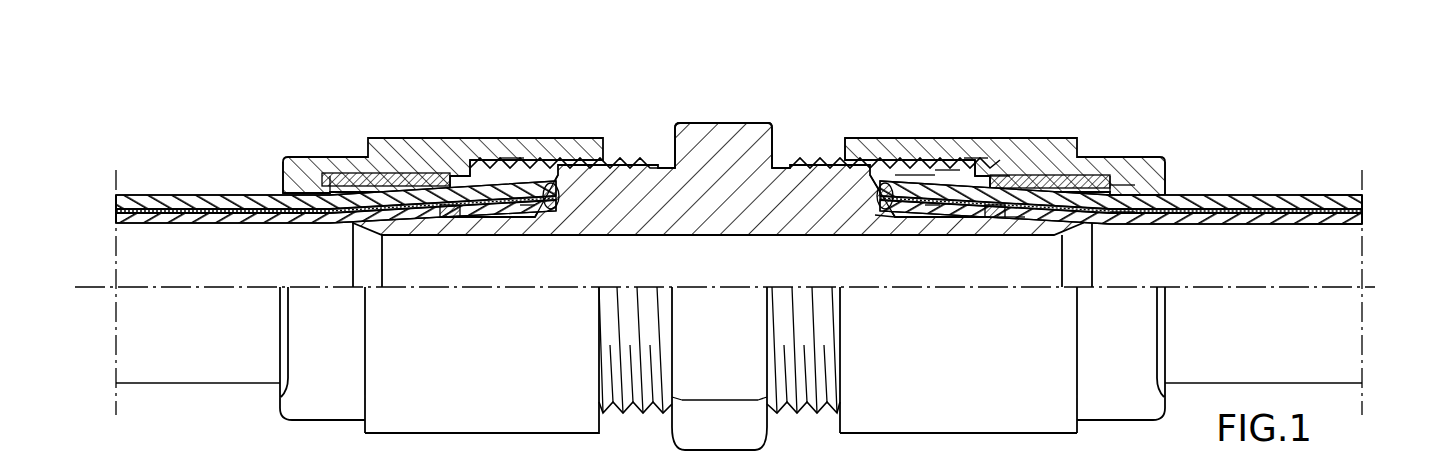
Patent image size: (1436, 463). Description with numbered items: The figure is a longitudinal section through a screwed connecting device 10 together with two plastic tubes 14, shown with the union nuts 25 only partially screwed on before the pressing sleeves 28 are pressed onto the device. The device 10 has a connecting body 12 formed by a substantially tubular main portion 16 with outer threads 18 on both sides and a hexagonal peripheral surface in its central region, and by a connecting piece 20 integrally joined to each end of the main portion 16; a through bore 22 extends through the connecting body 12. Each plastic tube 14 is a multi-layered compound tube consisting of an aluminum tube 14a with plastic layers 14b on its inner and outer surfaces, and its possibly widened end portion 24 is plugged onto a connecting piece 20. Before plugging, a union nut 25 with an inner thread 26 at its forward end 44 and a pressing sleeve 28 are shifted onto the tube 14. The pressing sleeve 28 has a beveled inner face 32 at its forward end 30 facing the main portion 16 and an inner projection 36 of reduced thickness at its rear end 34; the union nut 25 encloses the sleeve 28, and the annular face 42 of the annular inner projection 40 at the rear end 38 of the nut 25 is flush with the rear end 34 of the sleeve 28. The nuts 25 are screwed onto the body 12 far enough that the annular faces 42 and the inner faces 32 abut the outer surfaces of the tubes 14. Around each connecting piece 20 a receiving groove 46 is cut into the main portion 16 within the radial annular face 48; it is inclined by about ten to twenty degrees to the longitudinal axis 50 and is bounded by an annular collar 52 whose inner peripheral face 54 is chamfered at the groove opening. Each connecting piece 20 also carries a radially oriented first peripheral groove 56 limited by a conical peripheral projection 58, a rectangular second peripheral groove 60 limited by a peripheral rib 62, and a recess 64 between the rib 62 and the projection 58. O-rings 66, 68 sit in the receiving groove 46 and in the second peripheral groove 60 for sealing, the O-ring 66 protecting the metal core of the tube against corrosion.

The screwed connecting device 10 is at (668, 104).
The connecting body 12 is at (742, 112).
The plastic tube 14 is at (1250, 194).
The aluminum tube 14a is at (1365, 210).
The plastic layers 14b is at (1322, 207).
The main portion 16 is at (710, 140).
The outer threads 18 is at (640, 157).
The connecting piece 20 is at (495, 236).
The through bore 22 is at (460, 232).
The end portion 24 is at (484, 165).
The union nut 25 is at (408, 150).
The inner thread 26 is at (510, 160).
The pressing sleeve 28 is at (378, 165).
The forward end 30 is at (952, 165).
The beveled inner face 32 is at (1005, 170).
The rear end 34 is at (1125, 185).
The inner projection 36 is at (1125, 215).
The rear end 38 is at (268, 182).
The annular inner projection 40 is at (300, 190).
The annular face 42 is at (318, 188).
The forward end 44 is at (862, 133).
The receiving groove 46 is at (546, 180).
The radial annular face 48 is at (925, 170).
The longitudinal axis 50 is at (468, 297).
The annular collar 52 is at (905, 168).
The inner peripheral face 54 is at (845, 170).
The first peripheral groove 56 is at (535, 210).
The peripheral projection 58 is at (530, 210).
The second peripheral groove 60 is at (980, 220).
The peripheral rib 62 is at (470, 222).
The recess 64 is at (950, 222).
The O-ring 66 is at (885, 215).
The O-ring 68 is at (990, 225).